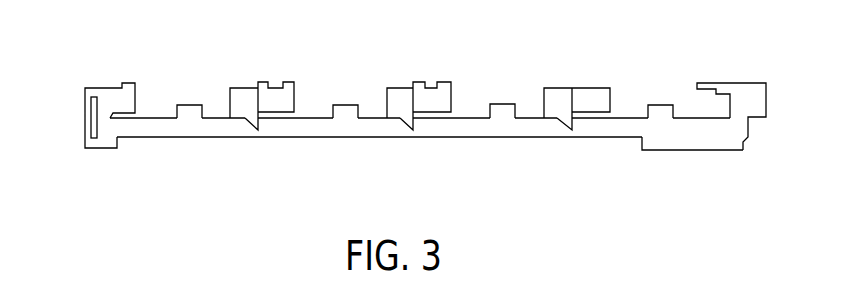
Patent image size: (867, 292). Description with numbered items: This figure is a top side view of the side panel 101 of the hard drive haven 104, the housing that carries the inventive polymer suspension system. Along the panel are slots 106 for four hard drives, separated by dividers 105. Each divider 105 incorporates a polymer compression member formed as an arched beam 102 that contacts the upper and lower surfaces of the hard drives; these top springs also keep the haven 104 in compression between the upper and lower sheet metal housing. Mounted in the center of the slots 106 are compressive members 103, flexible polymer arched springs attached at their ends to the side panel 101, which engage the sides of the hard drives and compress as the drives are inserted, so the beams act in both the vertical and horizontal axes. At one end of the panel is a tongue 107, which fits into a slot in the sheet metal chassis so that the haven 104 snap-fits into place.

The side panel 101 is at (638, 115).
The arched beam 102 is at (710, 68).
The compressive member 103 is at (652, 140).
The hard drive haven 104 is at (533, 150).
The divider 105 is at (283, 138).
The slot 106 is at (323, 115).
The tongue 107 is at (83, 116).